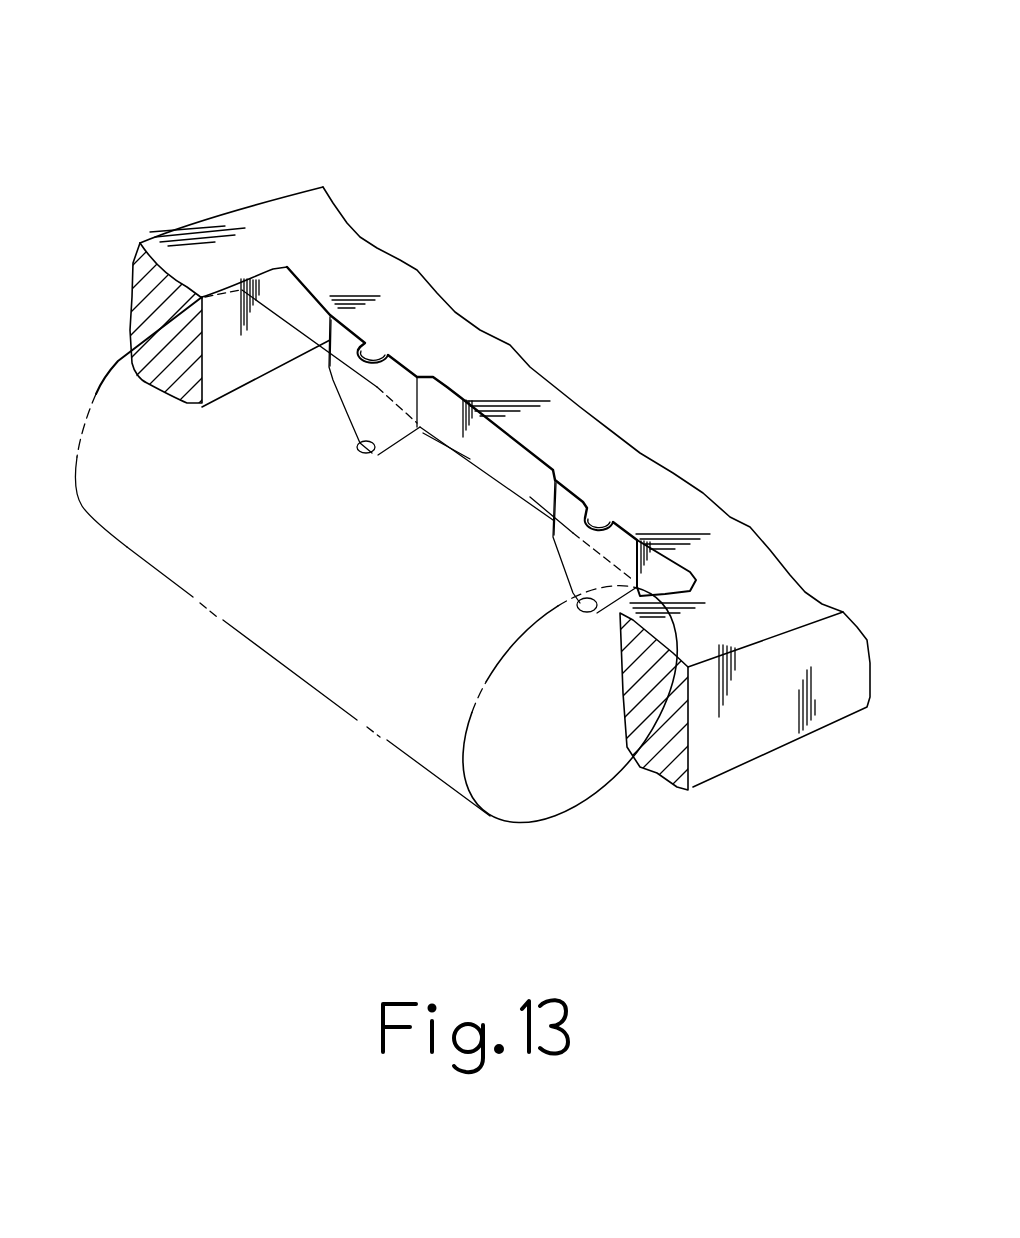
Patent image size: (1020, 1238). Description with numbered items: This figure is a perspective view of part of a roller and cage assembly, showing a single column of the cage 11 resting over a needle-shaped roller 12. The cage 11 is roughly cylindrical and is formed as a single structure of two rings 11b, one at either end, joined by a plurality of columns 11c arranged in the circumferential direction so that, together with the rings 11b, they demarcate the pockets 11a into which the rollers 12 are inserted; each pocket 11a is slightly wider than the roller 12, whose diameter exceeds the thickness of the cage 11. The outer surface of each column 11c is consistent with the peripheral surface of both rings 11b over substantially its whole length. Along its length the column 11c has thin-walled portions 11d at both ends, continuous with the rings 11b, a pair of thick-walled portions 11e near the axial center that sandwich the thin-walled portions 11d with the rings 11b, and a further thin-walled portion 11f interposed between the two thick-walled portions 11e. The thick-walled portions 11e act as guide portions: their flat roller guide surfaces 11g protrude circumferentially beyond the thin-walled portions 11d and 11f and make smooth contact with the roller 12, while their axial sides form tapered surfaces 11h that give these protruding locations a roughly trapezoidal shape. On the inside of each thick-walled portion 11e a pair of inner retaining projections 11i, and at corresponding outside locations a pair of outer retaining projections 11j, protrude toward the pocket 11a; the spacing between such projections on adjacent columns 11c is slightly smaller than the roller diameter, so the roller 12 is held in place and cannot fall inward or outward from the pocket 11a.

The cage 11 is at (270, 178).
The pocket 11a is at (289, 267).
The ring 11b is at (210, 240).
The column 11c is at (491, 370).
The thin-walled portion 11d is at (370, 267).
The thick-walled portion 11e is at (413, 340).
The thin-walled portion 11f is at (545, 403).
The roller guide surface 11g is at (353, 403).
The tapered surface 11h is at (328, 378).
The inner retaining projection 11i is at (360, 453).
The outer retaining projection 11j is at (372, 345).
The roller 12 is at (307, 650).